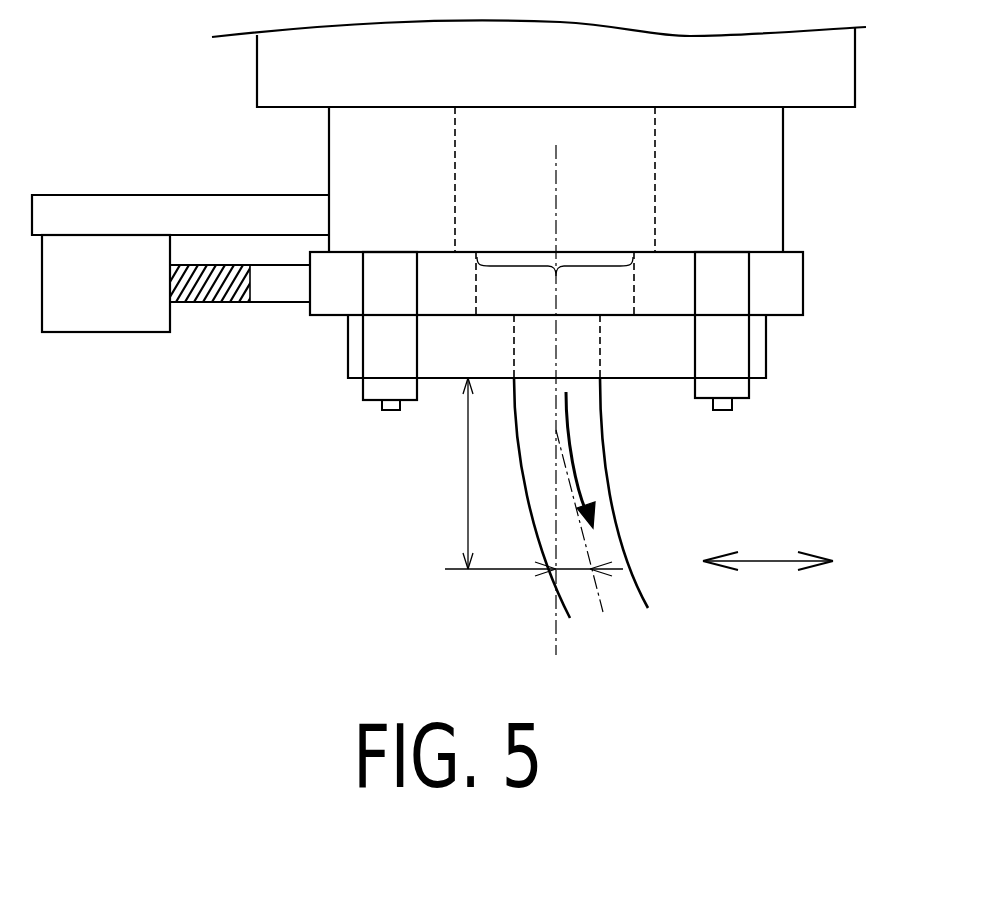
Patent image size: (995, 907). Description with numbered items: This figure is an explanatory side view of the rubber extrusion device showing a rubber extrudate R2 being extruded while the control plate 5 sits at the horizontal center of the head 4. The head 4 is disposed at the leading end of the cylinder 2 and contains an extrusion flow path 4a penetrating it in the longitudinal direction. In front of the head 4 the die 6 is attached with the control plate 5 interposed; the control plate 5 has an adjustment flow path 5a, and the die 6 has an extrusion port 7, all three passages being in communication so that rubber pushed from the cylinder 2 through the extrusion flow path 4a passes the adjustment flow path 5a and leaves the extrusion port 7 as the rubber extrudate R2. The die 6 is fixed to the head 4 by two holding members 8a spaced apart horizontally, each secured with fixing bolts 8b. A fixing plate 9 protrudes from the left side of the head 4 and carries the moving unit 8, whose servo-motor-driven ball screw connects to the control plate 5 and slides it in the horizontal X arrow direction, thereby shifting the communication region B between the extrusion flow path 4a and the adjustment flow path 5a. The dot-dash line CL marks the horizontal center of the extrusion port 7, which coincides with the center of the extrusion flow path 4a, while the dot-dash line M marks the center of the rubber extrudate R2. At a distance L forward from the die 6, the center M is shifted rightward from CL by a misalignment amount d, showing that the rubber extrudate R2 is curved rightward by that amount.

The cylinder 2 is at (264, 71).
The head 4 is at (783, 162).
The extrusion flow path 4a is at (455, 141).
The control plate 5 is at (803, 278).
The adjustment flow path 5a is at (476, 290).
The die 6 is at (766, 338).
The extrusion port 7 is at (514, 356).
The moving unit 8 is at (215, 318).
The holding member 8a is at (370, 356).
The fixing bolt 8b is at (391, 412).
The fixing plate 9 is at (247, 195).
The dot-dash line CL is at (556, 385).
The communication region B is at (555, 283).
The distance L is at (532, 473).
The dot-dash line M is at (586, 537).
The misalignment amount d is at (577, 572).
The rubber extrudate R2 is at (608, 540).
The X arrow direction X is at (768, 547).